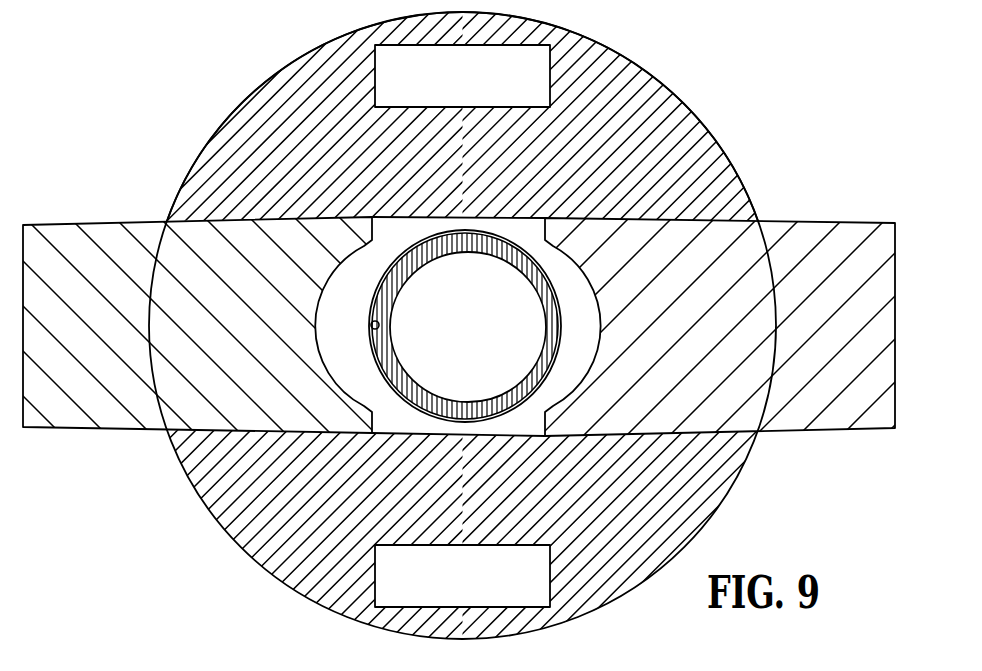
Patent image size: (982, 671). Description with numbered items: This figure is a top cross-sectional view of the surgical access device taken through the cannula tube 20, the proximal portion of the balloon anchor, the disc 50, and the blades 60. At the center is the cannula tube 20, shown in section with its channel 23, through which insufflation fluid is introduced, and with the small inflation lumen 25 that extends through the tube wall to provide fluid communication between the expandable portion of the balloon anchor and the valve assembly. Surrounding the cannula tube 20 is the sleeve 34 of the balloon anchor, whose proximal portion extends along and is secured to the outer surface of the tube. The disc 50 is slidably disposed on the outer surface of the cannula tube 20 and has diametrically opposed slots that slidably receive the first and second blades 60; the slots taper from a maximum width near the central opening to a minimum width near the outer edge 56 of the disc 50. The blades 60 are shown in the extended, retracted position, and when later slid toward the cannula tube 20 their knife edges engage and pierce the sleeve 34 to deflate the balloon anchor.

The cannula tube 20 is at (515, 256).
The channel 23 is at (440, 378).
The inflation lumen 25 is at (372, 328).
The sleeve 34 is at (508, 410).
The disc 50 is at (651, 59).
The outer edge 56 is at (257, 91).
The blades 60 is at (836, 215).